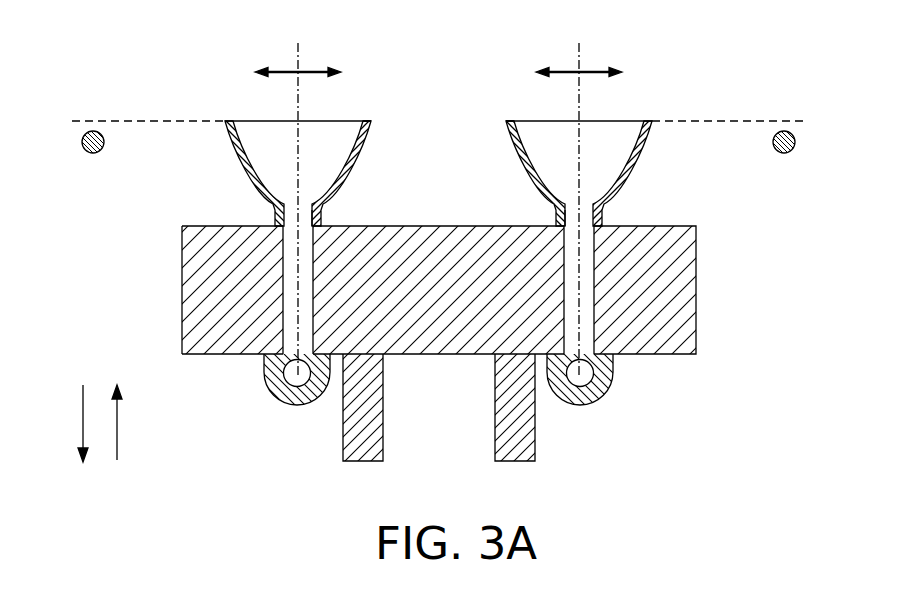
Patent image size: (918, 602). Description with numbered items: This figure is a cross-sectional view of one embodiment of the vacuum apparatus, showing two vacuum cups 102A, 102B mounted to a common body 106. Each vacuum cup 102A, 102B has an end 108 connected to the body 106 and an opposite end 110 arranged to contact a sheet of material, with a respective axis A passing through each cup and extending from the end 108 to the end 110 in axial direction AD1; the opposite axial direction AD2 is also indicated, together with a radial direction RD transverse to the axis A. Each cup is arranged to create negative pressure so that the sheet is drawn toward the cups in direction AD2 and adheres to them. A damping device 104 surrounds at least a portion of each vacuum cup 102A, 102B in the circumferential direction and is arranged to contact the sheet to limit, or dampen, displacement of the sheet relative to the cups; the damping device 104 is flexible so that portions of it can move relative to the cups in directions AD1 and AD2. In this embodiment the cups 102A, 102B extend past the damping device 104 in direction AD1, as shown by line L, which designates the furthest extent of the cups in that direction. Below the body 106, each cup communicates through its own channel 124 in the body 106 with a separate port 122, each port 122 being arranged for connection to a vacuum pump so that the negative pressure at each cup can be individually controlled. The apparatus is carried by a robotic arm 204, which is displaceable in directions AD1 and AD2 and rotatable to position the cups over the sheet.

The vacuum cup 102A is at (651, 116).
The vacuum cup 102B is at (226, 116).
The damping device 104 is at (93, 130).
The body 106 is at (441, 226).
The end 108 is at (322, 222).
The end 110 is at (371, 120).
The port 122 is at (265, 384).
The channel 124 is at (282, 250).
The robotic arm 204 is at (363, 455).
The line L is at (153, 119).
The axis A is at (299, 60).
The radial direction RD is at (280, 70).
The axial direction AD1 is at (118, 420).
The axial direction AD2 is at (82, 420).